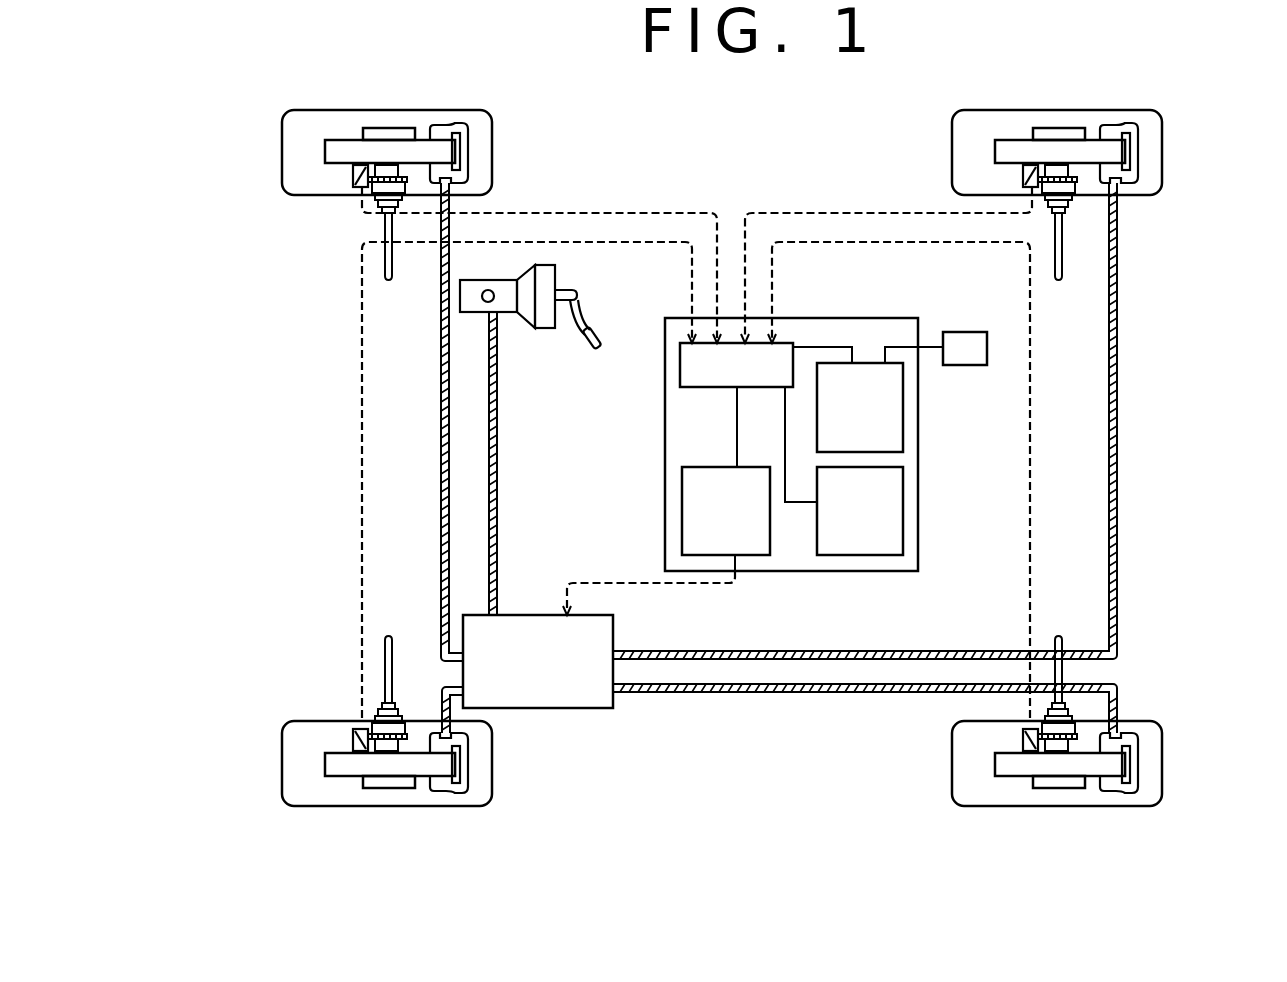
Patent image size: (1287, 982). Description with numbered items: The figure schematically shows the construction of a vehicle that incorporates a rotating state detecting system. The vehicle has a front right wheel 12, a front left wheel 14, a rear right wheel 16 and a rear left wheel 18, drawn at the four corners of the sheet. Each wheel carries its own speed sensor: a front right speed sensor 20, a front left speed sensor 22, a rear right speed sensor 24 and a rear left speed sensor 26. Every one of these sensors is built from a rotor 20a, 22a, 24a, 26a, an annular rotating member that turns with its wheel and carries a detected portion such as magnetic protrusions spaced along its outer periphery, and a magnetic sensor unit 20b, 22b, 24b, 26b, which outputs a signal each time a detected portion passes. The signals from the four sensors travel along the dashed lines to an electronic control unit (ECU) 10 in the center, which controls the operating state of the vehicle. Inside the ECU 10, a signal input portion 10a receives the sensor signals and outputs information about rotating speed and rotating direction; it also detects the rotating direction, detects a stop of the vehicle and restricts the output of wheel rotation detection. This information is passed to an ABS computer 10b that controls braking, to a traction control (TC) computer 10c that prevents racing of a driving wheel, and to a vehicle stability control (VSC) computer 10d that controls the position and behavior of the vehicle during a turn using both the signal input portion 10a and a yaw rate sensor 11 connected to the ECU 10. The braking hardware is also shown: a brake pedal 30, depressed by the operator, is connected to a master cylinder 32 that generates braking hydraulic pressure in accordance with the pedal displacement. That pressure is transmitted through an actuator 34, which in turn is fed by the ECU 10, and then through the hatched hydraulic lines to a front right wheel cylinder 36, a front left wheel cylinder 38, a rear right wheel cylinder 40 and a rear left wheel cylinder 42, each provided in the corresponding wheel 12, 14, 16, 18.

The electronic control unit (ECU) 10 is at (794, 412).
The signal input portion 10a is at (680, 372).
The ABS computer 10b is at (682, 515).
The traction control (TC) computer 10c is at (903, 512).
The vehicle stability control (VSC) computer 10d is at (903, 405).
The yaw rate sensor 11 is at (962, 332).
The front right wheel 12 is at (480, 132).
The front left wheel 14 is at (483, 788).
The rear right wheel 16 is at (1152, 137).
The rear left wheel 18 is at (1150, 788).
The front right speed sensor 20 is at (330, 166).
The rotor 20a is at (388, 166).
The magnetic sensor unit 20b is at (358, 166).
The front left speed sensor 22 is at (319, 757).
The rotor 22a is at (393, 752).
The magnetic sensor unit 22b is at (357, 750).
The rear right speed sensor 24 is at (972, 162).
The rotor 24a is at (1056, 166).
The magnetic sensor unit 24b is at (1024, 168).
The rear left speed sensor 26 is at (991, 754).
The rotor 26a is at (1053, 752).
The magnetic sensor unit 26b is at (1023, 750).
The brake pedal 30 is at (583, 328).
The master cylinder 32 is at (502, 290).
The actuator 34 is at (613, 637).
The front right wheel cylinder 36 is at (483, 167).
The front left wheel cylinder 38 is at (470, 750).
The rear right wheel cylinder 40 is at (1145, 167).
The rear left wheel cylinder 42 is at (1150, 740).